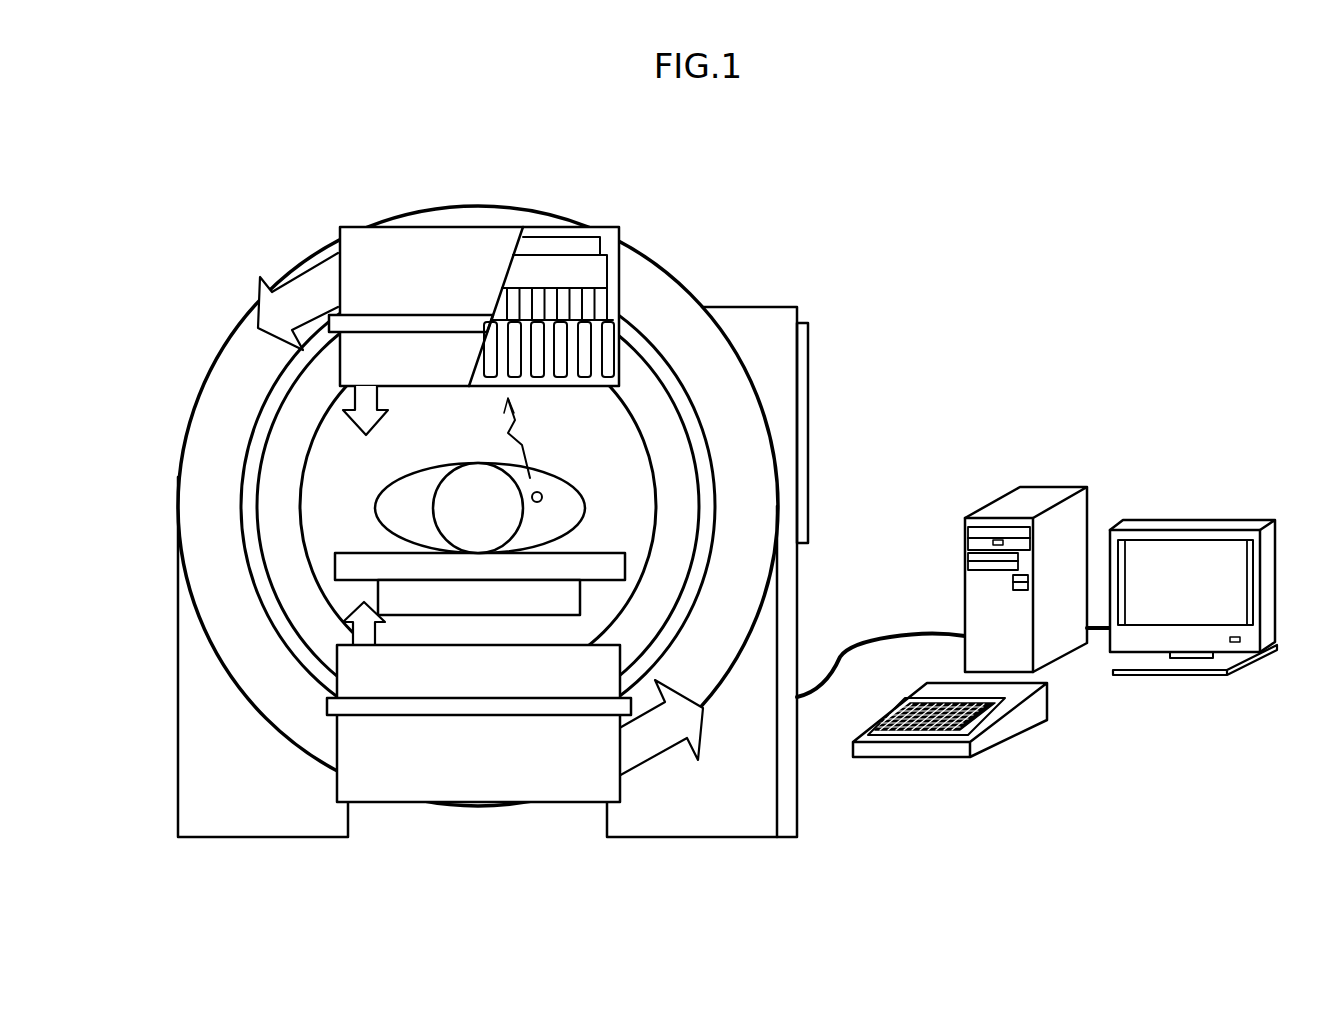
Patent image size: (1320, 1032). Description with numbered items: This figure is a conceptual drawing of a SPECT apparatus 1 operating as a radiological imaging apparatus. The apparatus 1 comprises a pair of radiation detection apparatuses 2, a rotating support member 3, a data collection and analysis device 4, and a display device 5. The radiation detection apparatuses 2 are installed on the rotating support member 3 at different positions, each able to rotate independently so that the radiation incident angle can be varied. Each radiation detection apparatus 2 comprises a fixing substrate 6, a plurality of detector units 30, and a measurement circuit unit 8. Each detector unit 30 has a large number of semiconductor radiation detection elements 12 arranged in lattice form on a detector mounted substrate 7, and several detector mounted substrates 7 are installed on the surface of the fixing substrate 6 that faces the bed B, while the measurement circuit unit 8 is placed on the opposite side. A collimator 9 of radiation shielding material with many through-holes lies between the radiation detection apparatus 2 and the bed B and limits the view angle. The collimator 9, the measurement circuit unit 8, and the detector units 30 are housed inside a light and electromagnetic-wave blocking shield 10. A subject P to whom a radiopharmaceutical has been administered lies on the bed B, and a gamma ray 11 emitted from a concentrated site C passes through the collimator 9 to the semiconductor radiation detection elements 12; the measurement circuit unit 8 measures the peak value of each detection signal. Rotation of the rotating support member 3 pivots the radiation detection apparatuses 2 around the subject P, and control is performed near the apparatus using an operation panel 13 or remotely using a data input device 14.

The SPECT apparatus 1 is at (1075, 152).
The radiation detection apparatus 2 is at (450, 217).
The rotating support member 3 is at (237, 617).
The data collection and analysis device 4 is at (1040, 495).
The display device 5 is at (1187, 552).
The fixing substrate 6 is at (536, 233).
The detector mounted substrate 7 is at (528, 268).
The measurement circuit unit 8 is at (560, 245).
The collimator 9 is at (610, 345).
The light and electromagnetic-wave blocking shield 10 is at (387, 267).
The gamma ray 11 is at (532, 452).
The semiconductor radiation detection element 12 is at (600, 303).
The operation panel 13 is at (808, 393).
The data input device 14 is at (1003, 728).
The detector unit 30 is at (593, 277).
The bed B is at (350, 563).
The concentrated site C is at (542, 494).
The subject P is at (570, 510).